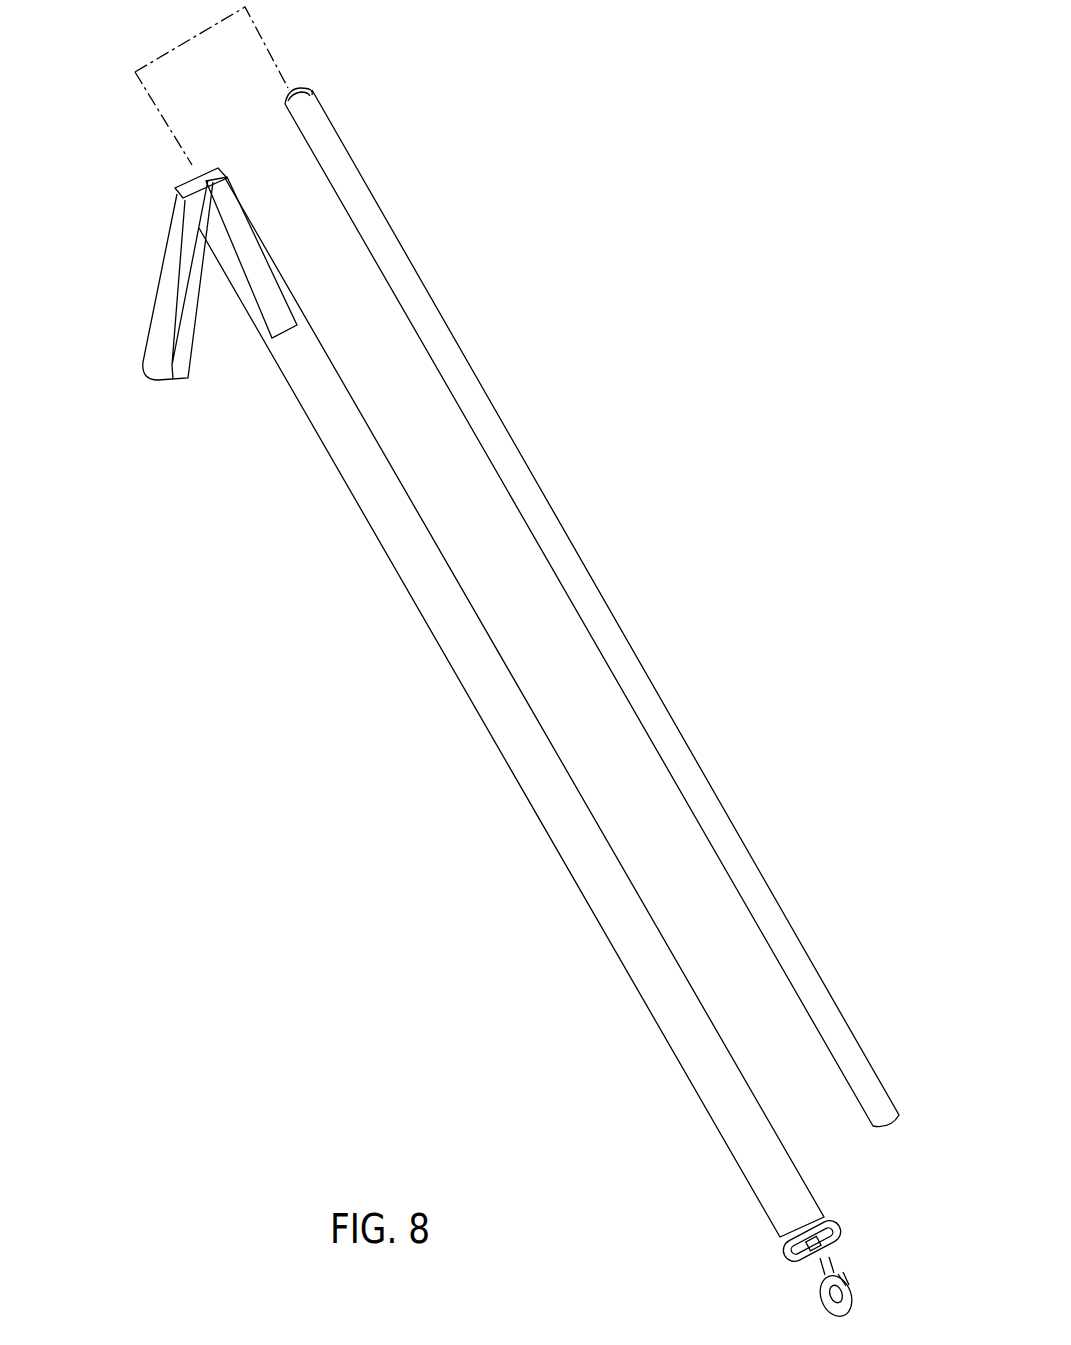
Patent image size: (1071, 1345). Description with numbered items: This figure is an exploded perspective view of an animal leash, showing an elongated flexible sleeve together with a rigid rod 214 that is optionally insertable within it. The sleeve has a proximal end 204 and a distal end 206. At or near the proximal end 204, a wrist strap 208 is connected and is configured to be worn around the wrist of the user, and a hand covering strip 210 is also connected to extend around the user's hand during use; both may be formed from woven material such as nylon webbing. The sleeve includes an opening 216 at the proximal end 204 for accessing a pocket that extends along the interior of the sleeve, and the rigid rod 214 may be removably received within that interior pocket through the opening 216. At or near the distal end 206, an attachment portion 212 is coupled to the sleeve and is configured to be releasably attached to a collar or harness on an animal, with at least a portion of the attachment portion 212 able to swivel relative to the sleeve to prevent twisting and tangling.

The proximal end 204 is at (160, 253).
The distal end 206 is at (748, 1233).
The wrist strap 208 is at (172, 310).
The hand covering strip 210 is at (262, 298).
The attachment portion 212 is at (864, 1256).
The rigid rod 214 is at (512, 463).
The opening 216 is at (204, 168).